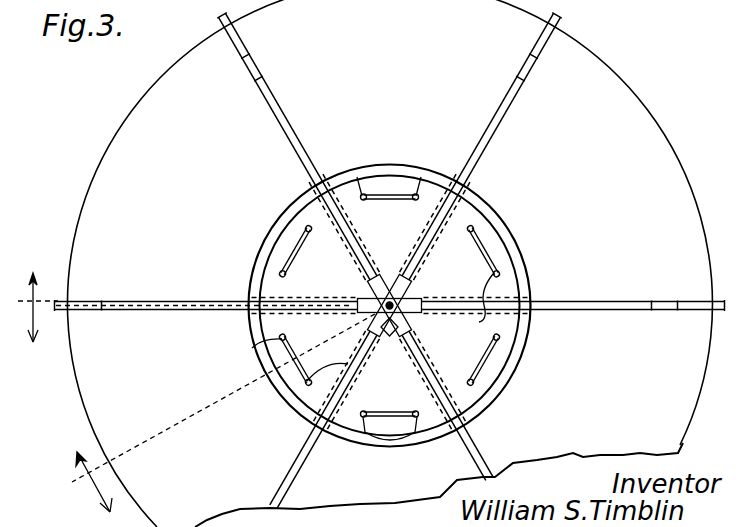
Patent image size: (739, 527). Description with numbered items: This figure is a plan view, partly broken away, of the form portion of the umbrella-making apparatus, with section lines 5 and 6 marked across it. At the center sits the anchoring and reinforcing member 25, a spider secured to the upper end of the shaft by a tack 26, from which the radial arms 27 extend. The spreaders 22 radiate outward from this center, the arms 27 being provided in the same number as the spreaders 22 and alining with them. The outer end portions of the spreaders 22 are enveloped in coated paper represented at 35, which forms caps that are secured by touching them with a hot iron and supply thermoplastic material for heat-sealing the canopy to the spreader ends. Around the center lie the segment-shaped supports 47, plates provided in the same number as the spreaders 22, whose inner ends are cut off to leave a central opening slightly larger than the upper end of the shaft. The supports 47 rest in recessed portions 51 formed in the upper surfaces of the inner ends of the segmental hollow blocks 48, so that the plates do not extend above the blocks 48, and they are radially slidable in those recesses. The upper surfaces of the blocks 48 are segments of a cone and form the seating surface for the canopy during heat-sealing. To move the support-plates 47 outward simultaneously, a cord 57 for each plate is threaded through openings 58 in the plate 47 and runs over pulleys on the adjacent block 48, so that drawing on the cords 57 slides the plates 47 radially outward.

The section line 5- 5 is at (33, 307).
The section line 6- 6 is at (216, 413).
The spreaders 22 is at (258, 80).
The anchoring and reinforcing member 25 is at (376, 296).
The tack 26 is at (388, 280).
The radial arms 27 is at (412, 295).
The coated paper caps 35 is at (238, 36).
The segment-shaped supports 47 is at (452, 174).
The segmental hollow blocks 48 is at (117, 164).
The recessed portions 51 is at (274, 238).
The cord 57 is at (389, 201).
The openings 58 is at (362, 194).